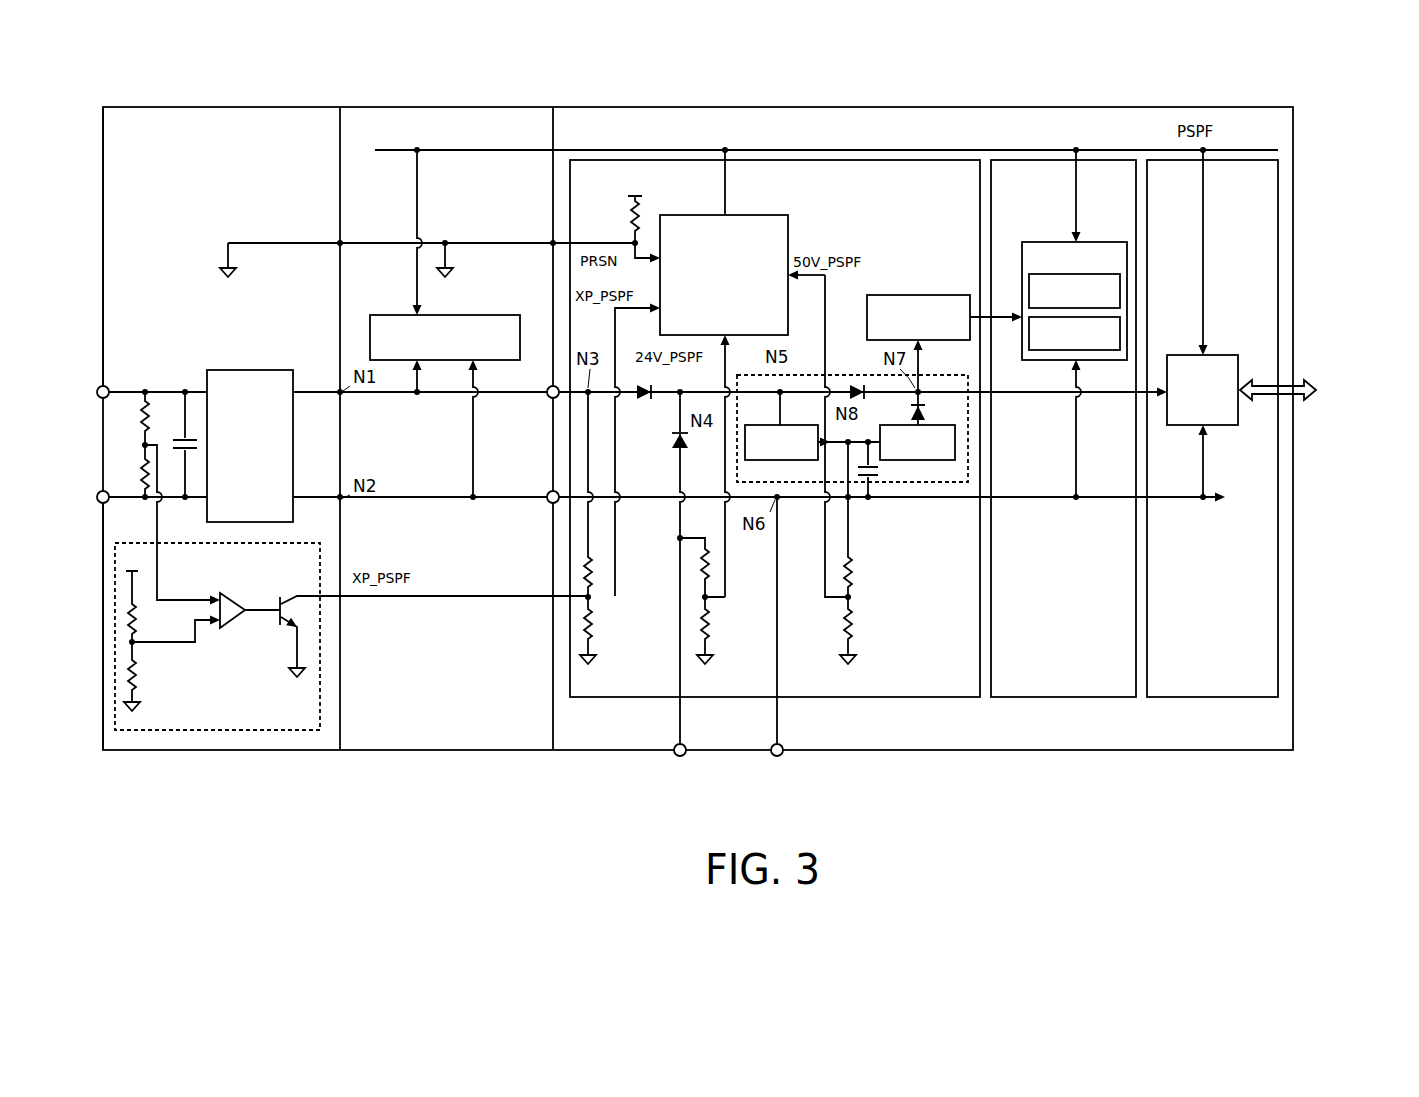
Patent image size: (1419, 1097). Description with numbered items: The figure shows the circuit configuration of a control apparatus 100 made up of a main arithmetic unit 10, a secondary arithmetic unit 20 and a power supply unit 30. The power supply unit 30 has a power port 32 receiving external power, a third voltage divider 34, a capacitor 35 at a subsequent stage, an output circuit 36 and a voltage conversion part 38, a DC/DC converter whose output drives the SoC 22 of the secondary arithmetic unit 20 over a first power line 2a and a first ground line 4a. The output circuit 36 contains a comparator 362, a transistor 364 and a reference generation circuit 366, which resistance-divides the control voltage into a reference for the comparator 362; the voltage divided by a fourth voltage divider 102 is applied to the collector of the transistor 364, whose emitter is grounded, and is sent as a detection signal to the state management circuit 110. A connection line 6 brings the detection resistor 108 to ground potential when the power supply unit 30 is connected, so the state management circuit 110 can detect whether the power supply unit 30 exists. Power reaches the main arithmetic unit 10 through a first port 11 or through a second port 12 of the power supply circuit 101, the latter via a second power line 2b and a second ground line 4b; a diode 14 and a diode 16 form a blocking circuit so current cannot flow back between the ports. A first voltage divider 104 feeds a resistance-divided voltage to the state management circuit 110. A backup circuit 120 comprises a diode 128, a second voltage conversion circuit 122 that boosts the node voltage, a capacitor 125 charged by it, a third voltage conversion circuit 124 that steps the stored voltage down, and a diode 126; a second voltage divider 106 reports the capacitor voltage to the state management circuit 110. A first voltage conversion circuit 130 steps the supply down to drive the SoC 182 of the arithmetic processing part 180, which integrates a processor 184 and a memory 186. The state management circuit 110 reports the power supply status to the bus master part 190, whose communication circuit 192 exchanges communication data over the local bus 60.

The control apparatus 100 is at (1246, 70).
The main arithmetic unit 10 is at (927, 108).
The secondary arithmetic unit 20 is at (453, 108).
The power supply unit 30 is at (230, 108).
The power port 32 is at (95, 383).
The third voltage divider 34 is at (135, 405).
The capacitor 35 is at (183, 438).
The output circuit 36 is at (227, 587).
The voltage conversion part 38 is at (253, 372).
The comparator 362 is at (243, 620).
The transistor 364 is at (268, 594).
The reference generation circuit 366 is at (148, 658).
The connection line 6 is at (258, 240).
The first power line 2a is at (322, 390).
The first ground line 4a is at (322, 495).
The second power line 2b is at (677, 590).
The second ground line 4b is at (780, 585).
The SoC 22 is at (478, 315).
The first port 11 is at (545, 380).
The second port 12 is at (790, 760).
The diode 14 is at (668, 449).
The diode 16 is at (647, 399).
The power supply circuit 101 is at (905, 700).
The fourth voltage divider 102 is at (604, 618).
The first voltage divider 104 is at (721, 618).
The second voltage divider 106 is at (864, 598).
The detection resistor 108 is at (624, 215).
The state management circuit 110 is at (756, 214).
The backup circuit 120 is at (948, 487).
The second voltage conversion circuit 122 is at (770, 462).
The third voltage conversion circuit 124 is at (918, 461).
The capacitor 125 is at (870, 482).
The diode 126 is at (924, 397).
The diode 128 is at (856, 383).
The first voltage conversion circuit 130 is at (915, 296).
The arithmetic processing part 180 is at (1073, 700).
The system on a chip (SoC) 182 is at (1020, 398).
The processor 184 is at (1108, 270).
The memory 186 is at (1112, 362).
The bus master part 190 is at (1215, 700).
The communication circuit 192 is at (1221, 355).
The local bus 60 is at (1323, 394).